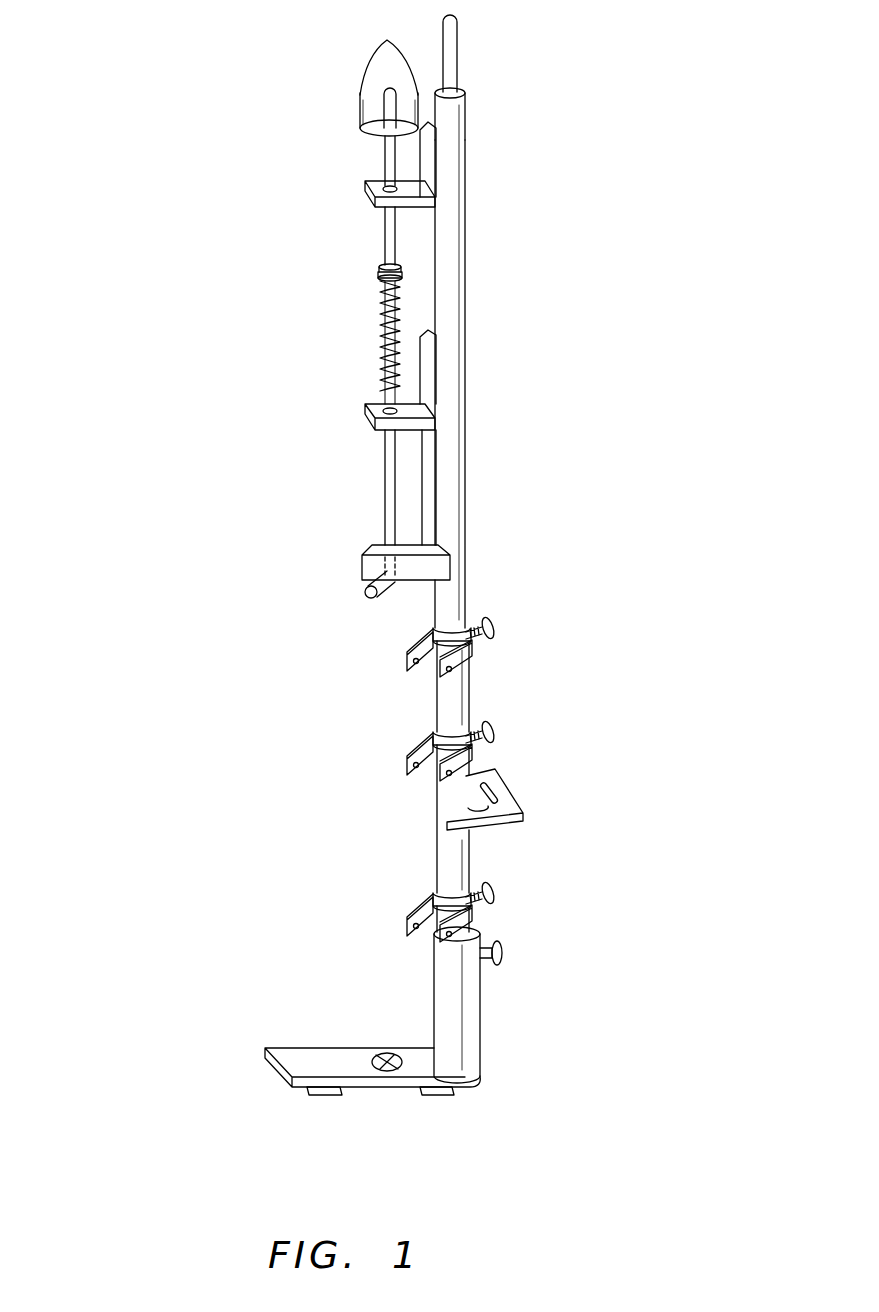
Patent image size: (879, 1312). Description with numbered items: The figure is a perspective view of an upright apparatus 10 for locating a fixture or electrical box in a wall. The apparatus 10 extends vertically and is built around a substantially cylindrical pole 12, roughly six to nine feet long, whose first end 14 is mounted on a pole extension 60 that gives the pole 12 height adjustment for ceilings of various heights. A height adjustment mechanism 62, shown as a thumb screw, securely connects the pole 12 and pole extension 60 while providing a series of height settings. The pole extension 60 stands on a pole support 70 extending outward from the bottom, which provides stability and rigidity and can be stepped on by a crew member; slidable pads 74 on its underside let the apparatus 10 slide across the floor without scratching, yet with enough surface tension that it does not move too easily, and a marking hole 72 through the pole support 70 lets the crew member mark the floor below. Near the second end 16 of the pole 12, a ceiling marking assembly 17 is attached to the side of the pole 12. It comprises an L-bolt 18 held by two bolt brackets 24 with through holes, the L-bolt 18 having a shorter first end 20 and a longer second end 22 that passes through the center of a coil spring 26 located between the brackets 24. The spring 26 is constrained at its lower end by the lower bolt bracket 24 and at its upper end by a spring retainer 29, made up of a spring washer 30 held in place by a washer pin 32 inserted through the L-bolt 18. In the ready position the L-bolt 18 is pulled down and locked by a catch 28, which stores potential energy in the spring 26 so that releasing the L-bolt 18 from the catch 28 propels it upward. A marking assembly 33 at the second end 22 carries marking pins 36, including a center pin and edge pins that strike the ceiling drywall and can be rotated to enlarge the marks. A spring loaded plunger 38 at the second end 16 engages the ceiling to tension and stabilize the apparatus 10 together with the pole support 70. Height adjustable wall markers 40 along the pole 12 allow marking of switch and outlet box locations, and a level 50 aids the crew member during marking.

The upright apparatus 10 is at (103, 38).
The pole 12 is at (470, 497).
The first end 14 is at (475, 863).
The second end 16 is at (467, 128).
The ceiling marking assembly 17 is at (285, 362).
The L-bolt 18 is at (384, 505).
The first end 20 is at (365, 592).
The second end 22 is at (385, 232).
The bolt brackets 24 is at (366, 191).
The spring 26 is at (383, 370).
The catch 28 is at (363, 558).
The spring retainer 29 is at (307, 276).
The spring washer 30 is at (379, 276).
The washer pin 32 is at (380, 267).
The marking assembly 33 is at (341, 68).
The marking pins 36 is at (390, 92).
The spring loaded plunger 38 is at (457, 47).
The height adjustable wall markers 40 is at (405, 660).
The level 50 is at (513, 792).
The pole extension 60 is at (433, 993).
The height adjustment mechanism 62 is at (500, 950).
The pole support 70 is at (340, 1088).
The marking hole 72 is at (375, 1055).
The slidable pads 74 is at (437, 1096).